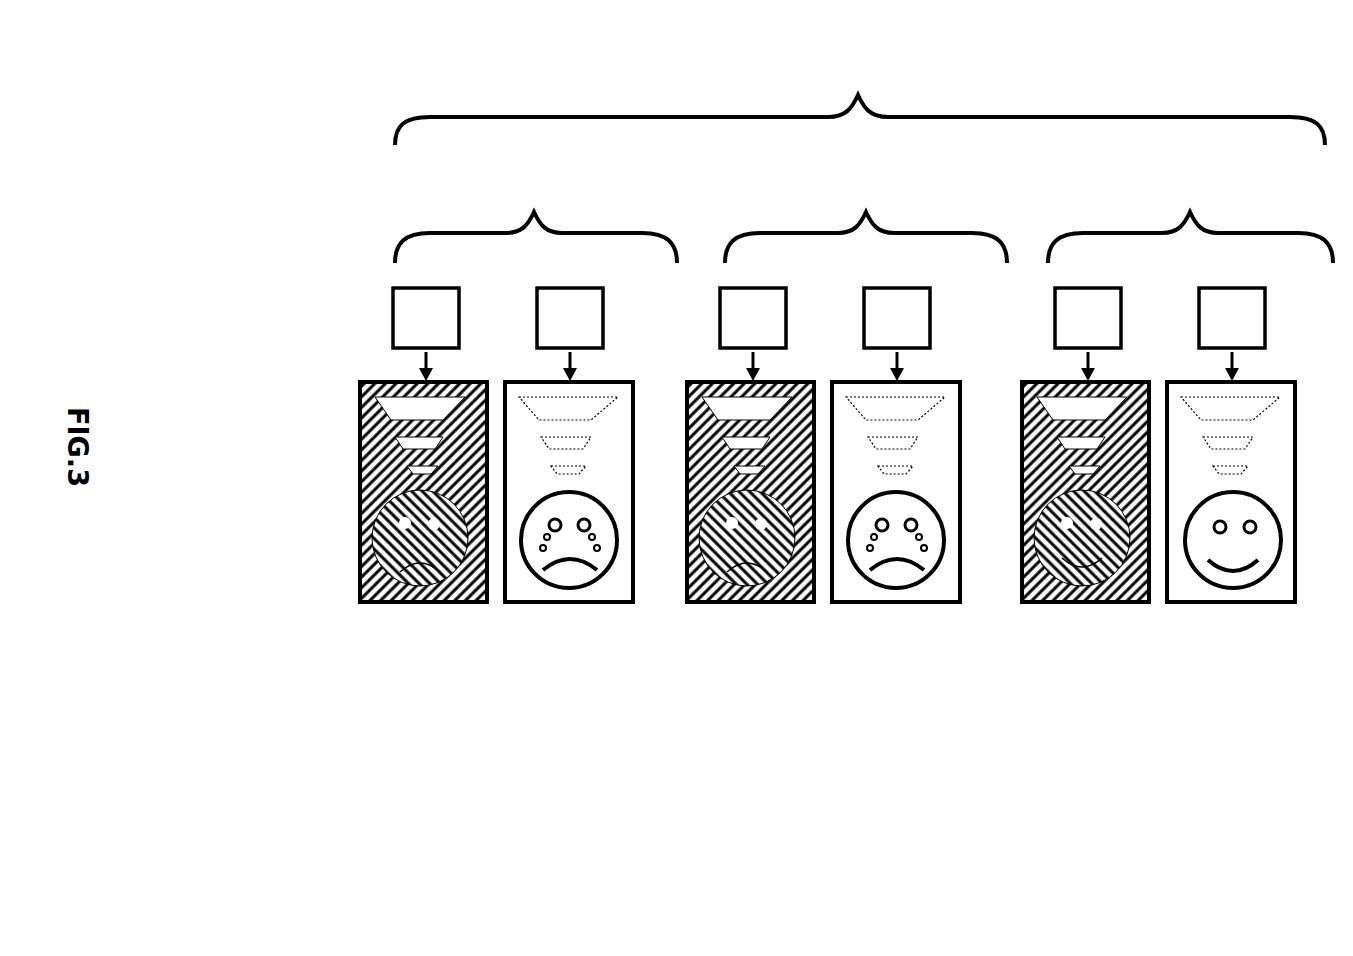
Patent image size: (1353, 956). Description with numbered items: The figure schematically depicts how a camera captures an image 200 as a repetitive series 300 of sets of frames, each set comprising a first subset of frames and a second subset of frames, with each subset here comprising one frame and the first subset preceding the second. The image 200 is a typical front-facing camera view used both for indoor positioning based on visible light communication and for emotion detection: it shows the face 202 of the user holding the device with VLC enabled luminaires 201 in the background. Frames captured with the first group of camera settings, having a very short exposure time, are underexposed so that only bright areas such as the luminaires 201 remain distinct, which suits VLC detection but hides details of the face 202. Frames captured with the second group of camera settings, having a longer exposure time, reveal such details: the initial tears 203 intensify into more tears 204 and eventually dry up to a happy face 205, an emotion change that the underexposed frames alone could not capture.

The repetitive series 300 is at (858, 97).
The image 200 is at (297, 407).
The luminaires 201 is at (383, 418).
The face 202 is at (367, 537).
The tears 203 is at (603, 556).
The tears 204 is at (926, 572).
The happy face 205 is at (1259, 567).